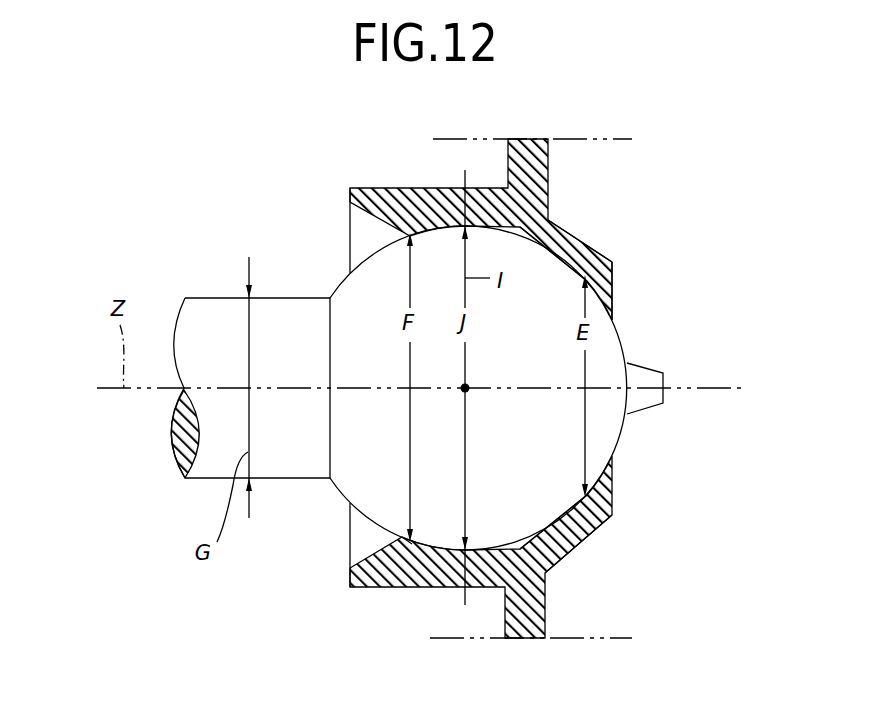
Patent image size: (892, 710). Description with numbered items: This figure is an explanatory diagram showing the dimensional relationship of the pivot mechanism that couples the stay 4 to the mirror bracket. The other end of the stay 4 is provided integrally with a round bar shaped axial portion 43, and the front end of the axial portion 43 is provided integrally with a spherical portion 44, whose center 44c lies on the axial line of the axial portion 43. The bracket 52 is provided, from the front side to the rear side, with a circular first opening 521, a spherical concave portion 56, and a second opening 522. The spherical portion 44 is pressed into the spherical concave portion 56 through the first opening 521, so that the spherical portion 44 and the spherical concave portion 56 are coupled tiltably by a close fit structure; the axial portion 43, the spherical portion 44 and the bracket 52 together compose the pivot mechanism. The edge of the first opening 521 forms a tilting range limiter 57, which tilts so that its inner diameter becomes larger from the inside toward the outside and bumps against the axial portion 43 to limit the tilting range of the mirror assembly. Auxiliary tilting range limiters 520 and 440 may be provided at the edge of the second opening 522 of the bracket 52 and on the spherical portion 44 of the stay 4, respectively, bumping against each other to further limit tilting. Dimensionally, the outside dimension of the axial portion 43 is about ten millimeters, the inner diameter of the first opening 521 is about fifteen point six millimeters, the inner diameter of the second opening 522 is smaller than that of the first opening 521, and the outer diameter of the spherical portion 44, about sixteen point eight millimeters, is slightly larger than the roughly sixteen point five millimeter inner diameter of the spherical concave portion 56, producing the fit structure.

The stay 4 is at (181, 280).
The axial portion 43 is at (215, 292).
The spherical portion 44 is at (345, 283).
The center of the spherical portion 44c is at (468, 392).
The auxiliary tilting range limiter 440 is at (652, 367).
The bracket 52 is at (380, 176).
The spherical concave portion 56 is at (538, 238).
The tilting range limiter 57 is at (348, 559).
The auxiliary tilting range limiter 520 is at (602, 272).
The first opening 521 is at (413, 549).
The second opening 522 is at (593, 528).